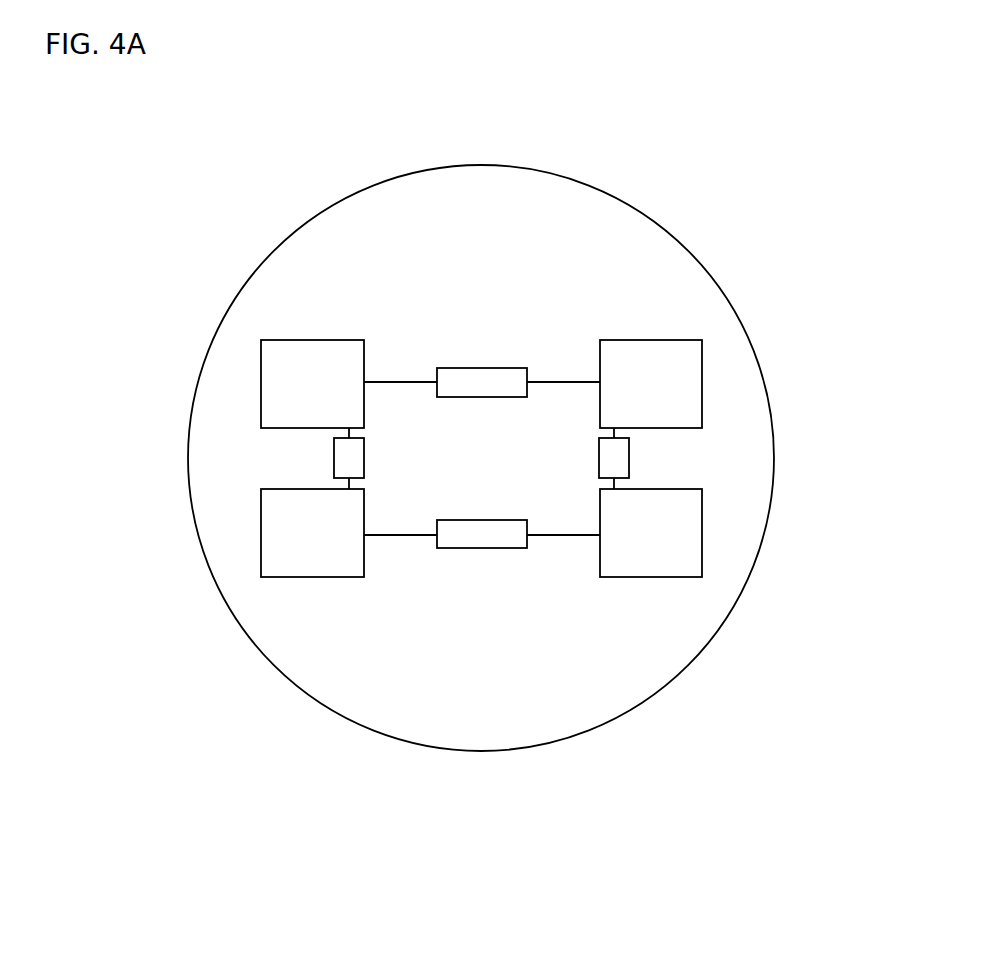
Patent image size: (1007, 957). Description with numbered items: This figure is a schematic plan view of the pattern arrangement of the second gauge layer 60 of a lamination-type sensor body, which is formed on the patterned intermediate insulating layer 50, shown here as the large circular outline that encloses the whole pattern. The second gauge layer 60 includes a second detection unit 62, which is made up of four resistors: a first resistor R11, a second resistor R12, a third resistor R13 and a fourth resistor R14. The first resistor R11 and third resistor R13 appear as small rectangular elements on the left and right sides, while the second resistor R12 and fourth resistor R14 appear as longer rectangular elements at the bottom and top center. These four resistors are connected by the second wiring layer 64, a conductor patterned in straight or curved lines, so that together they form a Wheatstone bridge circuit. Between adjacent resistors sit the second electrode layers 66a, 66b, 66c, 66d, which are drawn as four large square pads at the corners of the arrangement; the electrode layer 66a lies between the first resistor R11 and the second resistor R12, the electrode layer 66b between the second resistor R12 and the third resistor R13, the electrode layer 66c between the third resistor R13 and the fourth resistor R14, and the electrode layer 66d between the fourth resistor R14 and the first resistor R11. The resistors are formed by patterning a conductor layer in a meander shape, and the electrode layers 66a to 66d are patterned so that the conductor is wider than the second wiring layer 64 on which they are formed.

The intermediate insulating layer 50 is at (548, 198).
The second gauge layer 60 is at (497, 267).
The second detection unit 62 is at (530, 666).
The second wiring layer 64 is at (398, 537).
The second electrode layer 66a is at (280, 565).
The second electrode layer 66b is at (649, 552).
The second electrode layer 66c is at (668, 362).
The second electrode layer 66d is at (298, 355).
The first resistor R11 is at (344, 457).
The second resistor R12 is at (487, 537).
The third resistor R13 is at (618, 460).
The fourth resistor R14 is at (482, 383).